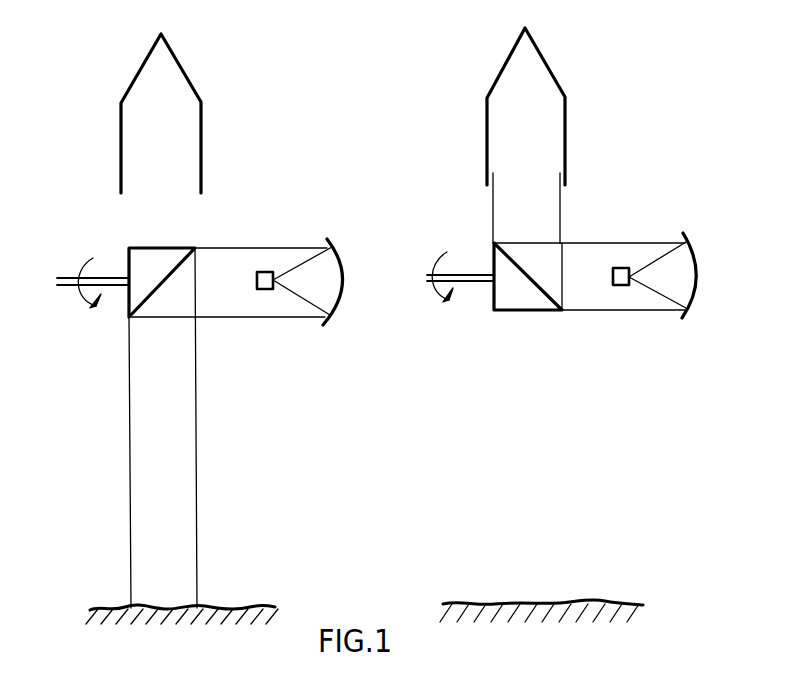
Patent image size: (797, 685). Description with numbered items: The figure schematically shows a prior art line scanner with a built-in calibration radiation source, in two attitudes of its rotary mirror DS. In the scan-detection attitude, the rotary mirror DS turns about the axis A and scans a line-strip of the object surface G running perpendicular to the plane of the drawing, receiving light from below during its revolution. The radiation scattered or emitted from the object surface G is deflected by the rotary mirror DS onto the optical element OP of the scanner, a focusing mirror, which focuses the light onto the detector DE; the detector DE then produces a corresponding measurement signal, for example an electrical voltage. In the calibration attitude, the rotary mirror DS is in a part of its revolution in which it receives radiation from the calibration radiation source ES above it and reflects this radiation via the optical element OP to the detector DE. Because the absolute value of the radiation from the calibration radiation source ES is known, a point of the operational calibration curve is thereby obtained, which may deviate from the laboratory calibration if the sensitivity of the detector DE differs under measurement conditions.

In FIG. 1A, the calibration radiation source ES is at (184, 156).
In FIG. 1B, the calibration radiation source ES is at (553, 155).
In FIG. 1A, the rotary mirror DS is at (138, 296).
In FIG. 1B, the rotary mirror DS is at (502, 297).
In FIG. 1A, the axis A is at (84, 283).
In FIG. 1B, the axis A is at (451, 277).
In FIG. 1A, the detector DE is at (267, 290).
In FIG. 1B, the detector DE is at (623, 285).
In FIG. 1A, the optical element OP is at (336, 259).
In FIG. 1B, the optical element OP is at (692, 250).
In FIG. 1A, the object surface G is at (182, 629).
In FIG. 1B, the object surface G is at (541, 624).